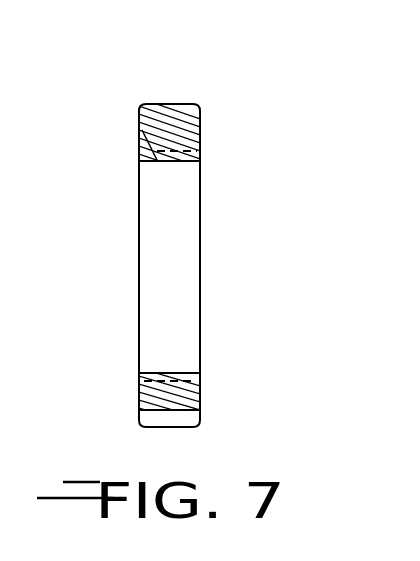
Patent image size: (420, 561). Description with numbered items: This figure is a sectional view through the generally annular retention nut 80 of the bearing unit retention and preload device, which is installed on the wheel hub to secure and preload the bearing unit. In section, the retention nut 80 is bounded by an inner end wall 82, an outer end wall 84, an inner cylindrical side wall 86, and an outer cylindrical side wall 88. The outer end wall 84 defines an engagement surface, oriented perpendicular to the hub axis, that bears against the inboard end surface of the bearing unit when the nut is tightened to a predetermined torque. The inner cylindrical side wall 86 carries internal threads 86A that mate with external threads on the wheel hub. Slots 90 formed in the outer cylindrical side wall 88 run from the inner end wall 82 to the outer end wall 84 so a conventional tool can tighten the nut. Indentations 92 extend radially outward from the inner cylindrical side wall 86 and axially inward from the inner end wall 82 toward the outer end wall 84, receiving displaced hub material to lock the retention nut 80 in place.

The retention nut 80 is at (212, 122).
The inner end wall 82 is at (140, 285).
The outer end wall 84 is at (200, 262).
The inner cylindrical side wall 86 is at (183, 162).
The internal threads 86A is at (175, 374).
The outer cylindrical side wall 88 is at (163, 103).
The slots 90 is at (197, 417).
The indentations 92 is at (145, 148).